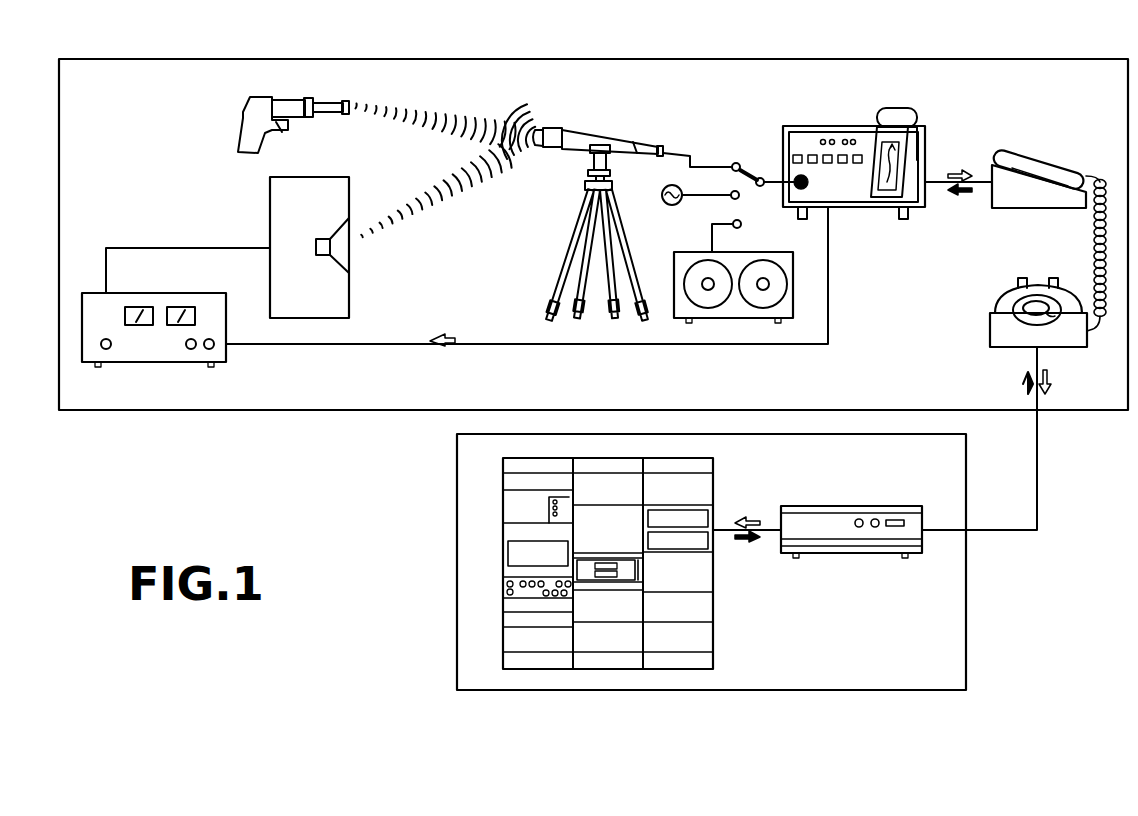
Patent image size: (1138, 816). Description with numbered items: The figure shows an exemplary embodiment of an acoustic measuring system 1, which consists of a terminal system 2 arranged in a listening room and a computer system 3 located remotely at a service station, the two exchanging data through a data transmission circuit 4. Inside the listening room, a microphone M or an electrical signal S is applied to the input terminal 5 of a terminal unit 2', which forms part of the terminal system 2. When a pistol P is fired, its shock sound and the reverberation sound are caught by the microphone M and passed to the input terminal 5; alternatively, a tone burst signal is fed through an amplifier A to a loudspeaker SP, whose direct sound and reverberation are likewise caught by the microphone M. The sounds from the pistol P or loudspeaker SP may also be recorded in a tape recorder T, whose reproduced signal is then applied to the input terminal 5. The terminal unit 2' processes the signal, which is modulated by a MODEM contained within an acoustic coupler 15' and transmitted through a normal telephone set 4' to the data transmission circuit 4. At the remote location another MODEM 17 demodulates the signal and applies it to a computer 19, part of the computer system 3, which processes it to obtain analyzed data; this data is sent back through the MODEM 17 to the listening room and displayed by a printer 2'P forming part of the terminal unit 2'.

The acoustic measuring system 1 is at (593, 217).
The terminal system 2 is at (593, 217).
The pistol P is at (250, 125).
The loudspeaker SP is at (270, 226).
The amplifier A is at (175, 363).
The microphone M is at (638, 143).
The electrical signal S is at (662, 195).
The tape recorder T is at (793, 290).
The input terminal 5 is at (794, 178).
The terminal unit 2' is at (855, 182).
The printer 2'P is at (924, 152).
The acoustic coupler 15' is at (1037, 200).
The telephone set 4' is at (1053, 330).
The data transmission circuit 4 is at (991, 438).
The MODEM 17 is at (845, 558).
The computer system 3 is at (457, 553).
The computer 19 is at (502, 638).